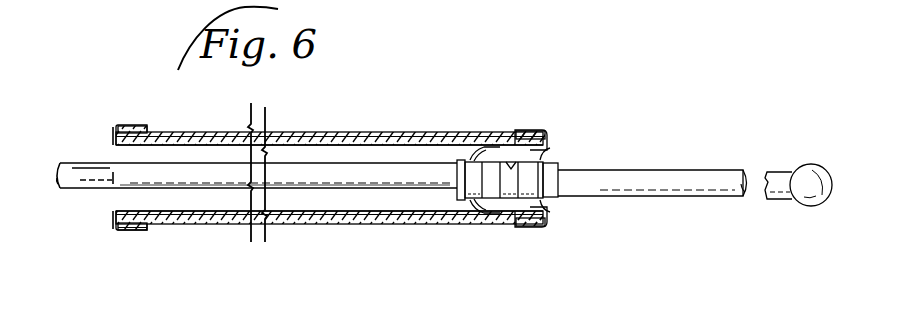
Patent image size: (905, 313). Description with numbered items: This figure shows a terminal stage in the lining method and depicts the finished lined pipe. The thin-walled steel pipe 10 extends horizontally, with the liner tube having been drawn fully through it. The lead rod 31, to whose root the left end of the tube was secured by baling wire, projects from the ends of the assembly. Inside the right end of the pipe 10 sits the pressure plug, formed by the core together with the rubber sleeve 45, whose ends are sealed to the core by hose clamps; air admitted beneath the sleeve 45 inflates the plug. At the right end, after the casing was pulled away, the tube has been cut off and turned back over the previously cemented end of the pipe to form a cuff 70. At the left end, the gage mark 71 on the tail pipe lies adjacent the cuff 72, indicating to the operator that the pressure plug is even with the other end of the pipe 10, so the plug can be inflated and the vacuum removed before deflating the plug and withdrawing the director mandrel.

The steel pipe 10 is at (333, 131).
The lead rod 31 is at (696, 170).
The rubber sleeve 45 is at (489, 158).
The cuff 70 is at (527, 131).
The gage mark 71 is at (113, 178).
The cuff 72 is at (115, 221).